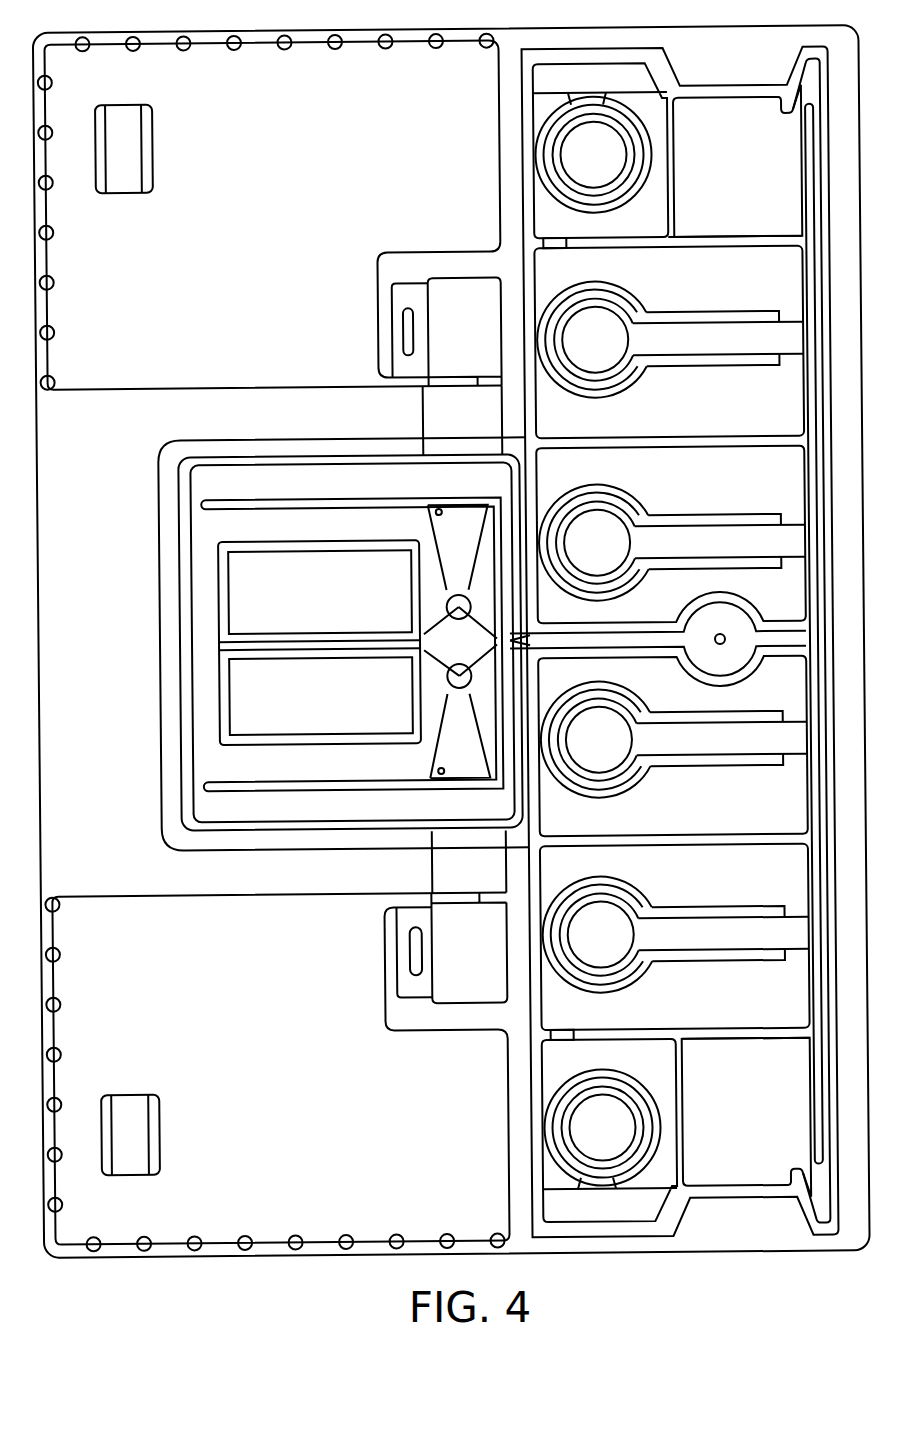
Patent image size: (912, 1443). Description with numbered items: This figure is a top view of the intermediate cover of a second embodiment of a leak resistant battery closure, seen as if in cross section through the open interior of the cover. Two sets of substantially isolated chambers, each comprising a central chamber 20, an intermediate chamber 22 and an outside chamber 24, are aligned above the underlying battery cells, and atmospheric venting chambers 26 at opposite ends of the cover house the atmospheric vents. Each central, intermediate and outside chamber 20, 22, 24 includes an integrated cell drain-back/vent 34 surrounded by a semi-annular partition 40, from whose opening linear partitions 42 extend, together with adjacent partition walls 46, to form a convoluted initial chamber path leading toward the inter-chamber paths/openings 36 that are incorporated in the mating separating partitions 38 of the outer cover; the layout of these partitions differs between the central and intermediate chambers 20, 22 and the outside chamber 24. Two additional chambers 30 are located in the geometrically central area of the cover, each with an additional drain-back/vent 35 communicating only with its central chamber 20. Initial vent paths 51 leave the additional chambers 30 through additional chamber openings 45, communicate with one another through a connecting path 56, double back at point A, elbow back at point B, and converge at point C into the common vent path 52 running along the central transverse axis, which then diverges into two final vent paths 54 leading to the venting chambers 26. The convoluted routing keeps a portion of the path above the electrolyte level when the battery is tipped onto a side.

The central chambers 20 is at (709, 492).
The intermediate chambers 22 is at (704, 294).
The outside chambers 24 is at (637, 1076).
The atmospheric venting chambers 26 is at (720, 189).
The additional chambers 30 is at (448, 562).
The cell drain-back/vent 34 is at (583, 170).
The additional drain-back/vent 35 is at (446, 606).
The inter-chamber paths/openings 36 is at (556, 240).
The mating separating partition 38 is at (740, 248).
The semi-annular partition 40 is at (565, 113).
The linear partitions 42 is at (733, 953).
The additional chamber openings 45 is at (385, 445).
The slot wall 46 is at (755, 358).
The initial vent paths 51 is at (286, 470).
The common vent path 52 is at (650, 640).
The final vent paths 54 is at (818, 152).
The connecting path 56 is at (203, 620).
The point A is at (203, 502).
The point B is at (513, 462).
The point C is at (510, 641).